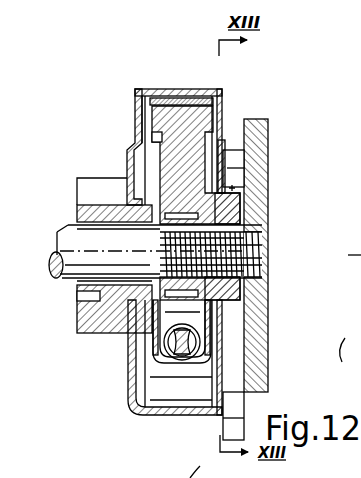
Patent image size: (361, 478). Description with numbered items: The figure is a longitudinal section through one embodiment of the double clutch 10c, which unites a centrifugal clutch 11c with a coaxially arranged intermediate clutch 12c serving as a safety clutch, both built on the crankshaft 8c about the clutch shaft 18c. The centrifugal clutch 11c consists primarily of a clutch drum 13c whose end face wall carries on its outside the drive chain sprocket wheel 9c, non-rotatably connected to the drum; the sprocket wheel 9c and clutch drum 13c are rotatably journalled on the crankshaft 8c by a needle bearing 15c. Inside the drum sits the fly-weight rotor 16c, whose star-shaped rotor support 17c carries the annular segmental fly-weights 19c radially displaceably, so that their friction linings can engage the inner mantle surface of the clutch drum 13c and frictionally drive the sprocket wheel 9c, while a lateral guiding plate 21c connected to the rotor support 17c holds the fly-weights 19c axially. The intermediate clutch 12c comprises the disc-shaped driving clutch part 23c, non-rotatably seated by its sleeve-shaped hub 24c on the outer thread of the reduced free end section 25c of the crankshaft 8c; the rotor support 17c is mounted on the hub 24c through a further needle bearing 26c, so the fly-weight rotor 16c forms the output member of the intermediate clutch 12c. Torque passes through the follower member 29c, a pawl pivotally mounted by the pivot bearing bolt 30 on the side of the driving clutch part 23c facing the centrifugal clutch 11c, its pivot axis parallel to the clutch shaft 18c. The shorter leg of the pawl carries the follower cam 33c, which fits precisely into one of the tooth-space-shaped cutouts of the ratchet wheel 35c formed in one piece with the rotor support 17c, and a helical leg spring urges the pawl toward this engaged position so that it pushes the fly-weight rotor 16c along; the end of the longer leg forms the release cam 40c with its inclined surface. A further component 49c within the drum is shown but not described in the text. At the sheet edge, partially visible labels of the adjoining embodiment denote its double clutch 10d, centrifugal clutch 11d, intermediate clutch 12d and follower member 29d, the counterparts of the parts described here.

The crankshaft 8c is at (68, 232).
The drive chain sprocket wheel 9c is at (82, 333).
The double clutch 10c is at (186, 70).
The centrifugal clutch 11c is at (108, 70).
The intermediate clutch 12c is at (268, 105).
The clutch drum 13c is at (143, 92).
The needle bearing 15c is at (76, 212).
The fly-weight rotor 16c is at (143, 126).
The rotor support 17c is at (170, 150).
The clutch shaft 18c is at (48, 256).
The fly-weights 19c is at (140, 101).
The lateral guiding plate 21c is at (128, 172).
The driving clutch part 23c is at (265, 302).
The sleeve-shaped hub 24c is at (246, 233).
The free end section of crankshaft 25c is at (78, 281).
The needle bearing 26c is at (270, 282).
The follower member 29c is at (268, 343).
The pivot bearing bolt 30 is at (352, 222).
The follower cam 33c is at (232, 190).
The ratchet wheel 35c is at (235, 208).
The release cam 40c is at (225, 430).
The roller 49c is at (170, 365).
The follower member 29d is at (343, 366).
The centrifugal clutch 11d is at (109, 477).
The double clutch 10d is at (194, 471).
The intermediate clutch 12d is at (292, 469).